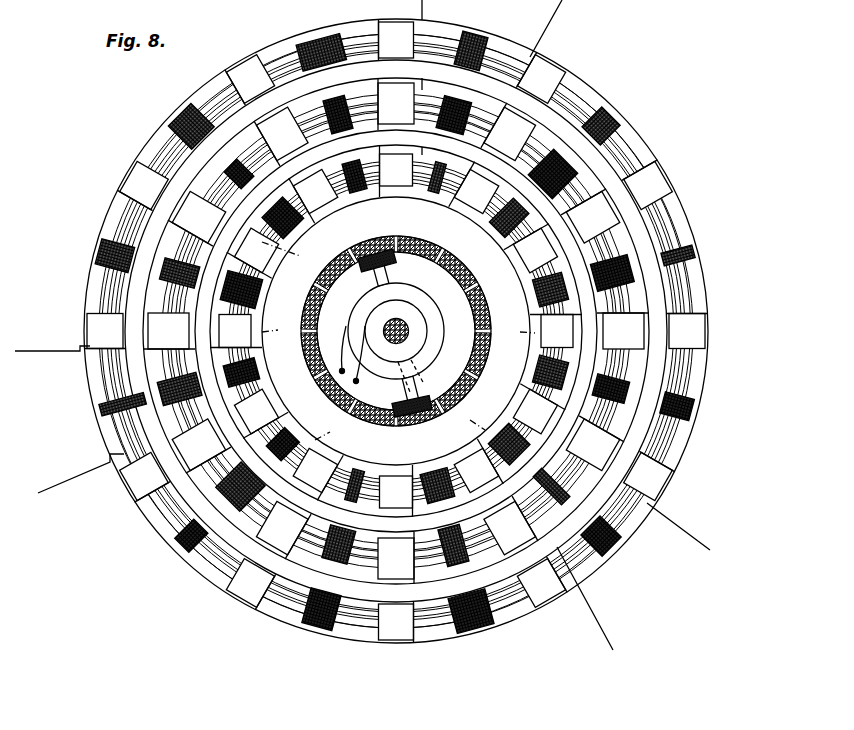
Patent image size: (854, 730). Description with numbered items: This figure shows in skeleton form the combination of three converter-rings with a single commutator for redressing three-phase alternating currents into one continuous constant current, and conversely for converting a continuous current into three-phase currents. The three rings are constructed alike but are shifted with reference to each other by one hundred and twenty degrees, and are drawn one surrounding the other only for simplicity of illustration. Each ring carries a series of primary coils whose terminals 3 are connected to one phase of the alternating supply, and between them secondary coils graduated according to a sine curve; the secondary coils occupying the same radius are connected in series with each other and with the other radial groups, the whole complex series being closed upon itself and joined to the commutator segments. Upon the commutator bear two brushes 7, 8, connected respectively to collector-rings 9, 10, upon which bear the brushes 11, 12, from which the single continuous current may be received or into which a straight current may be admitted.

The terminal 3 is at (494, 77).
The brush 7 is at (377, 269).
The brush 8 is at (412, 383).
The collector-ring 9 is at (396, 331).
The collector-ring 10 is at (396, 331).
The brush 11 is at (347, 352).
The brush 12 is at (362, 367).